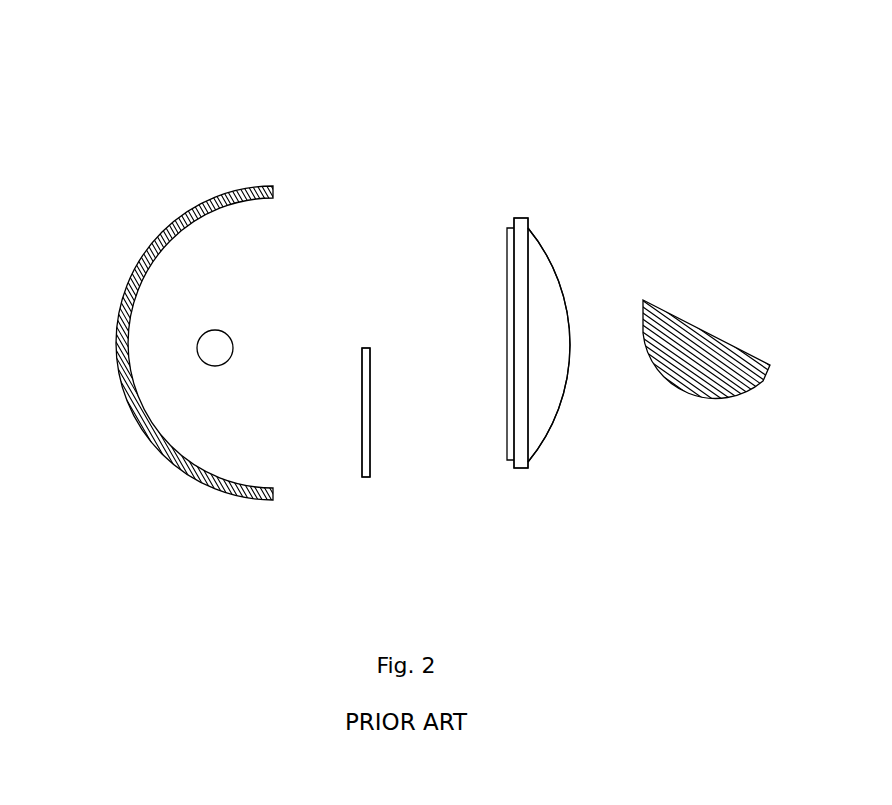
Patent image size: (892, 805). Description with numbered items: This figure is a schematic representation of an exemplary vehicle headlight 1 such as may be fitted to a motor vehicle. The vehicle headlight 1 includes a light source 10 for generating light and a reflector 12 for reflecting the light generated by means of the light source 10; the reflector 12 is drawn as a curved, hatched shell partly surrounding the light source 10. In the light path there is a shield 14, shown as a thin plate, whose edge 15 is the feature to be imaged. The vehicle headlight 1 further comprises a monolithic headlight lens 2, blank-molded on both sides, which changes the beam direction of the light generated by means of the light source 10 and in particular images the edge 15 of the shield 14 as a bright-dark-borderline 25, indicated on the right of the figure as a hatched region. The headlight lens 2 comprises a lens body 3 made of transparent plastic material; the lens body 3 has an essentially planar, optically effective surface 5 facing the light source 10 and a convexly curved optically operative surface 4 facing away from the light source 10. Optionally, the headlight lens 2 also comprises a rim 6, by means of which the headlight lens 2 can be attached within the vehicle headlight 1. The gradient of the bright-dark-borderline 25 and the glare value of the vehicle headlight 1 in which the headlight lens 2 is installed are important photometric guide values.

The vehicle headlight 1 is at (492, 127).
The headlight lens 2 is at (525, 218).
The lens body 3 is at (545, 403).
The convexly curved optically operative surface 4 is at (540, 447).
The essentially planar optically effective surface 5 is at (507, 430).
The rim 6 is at (521, 452).
The light source 10 is at (215, 348).
The reflector 12 is at (207, 213).
The shield 14 is at (366, 452).
The edge of the shield 15 is at (366, 350).
The bright-dark-borderline 25 is at (693, 323).